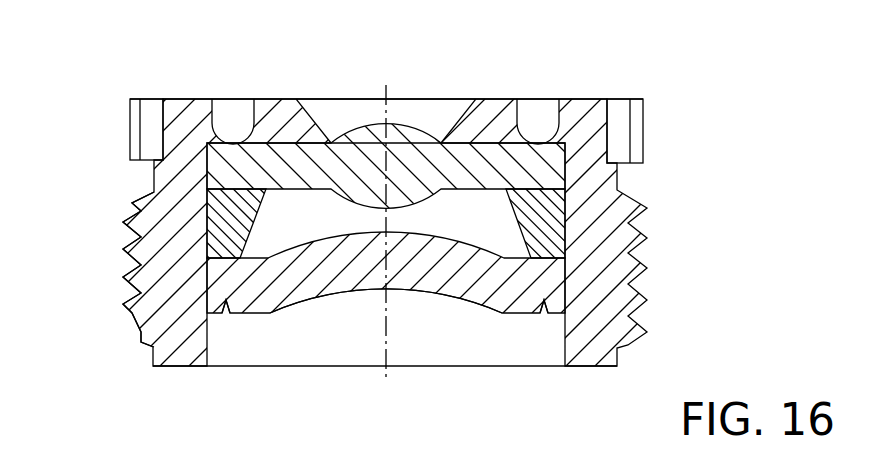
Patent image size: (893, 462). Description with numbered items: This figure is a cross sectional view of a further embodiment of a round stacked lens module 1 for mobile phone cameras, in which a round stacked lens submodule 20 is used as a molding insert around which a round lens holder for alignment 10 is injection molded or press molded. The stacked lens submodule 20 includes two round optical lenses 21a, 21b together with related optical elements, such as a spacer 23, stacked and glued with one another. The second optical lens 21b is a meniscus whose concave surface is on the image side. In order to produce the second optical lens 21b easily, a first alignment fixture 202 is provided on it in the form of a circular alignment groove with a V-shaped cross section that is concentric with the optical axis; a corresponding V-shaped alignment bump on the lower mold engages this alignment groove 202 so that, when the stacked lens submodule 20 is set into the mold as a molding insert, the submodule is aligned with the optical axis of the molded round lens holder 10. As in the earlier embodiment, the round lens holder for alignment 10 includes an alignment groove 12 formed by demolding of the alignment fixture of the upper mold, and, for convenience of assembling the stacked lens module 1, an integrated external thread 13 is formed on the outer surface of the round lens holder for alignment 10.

The round stacked lens module 1 is at (445, 218).
The round lens holder for alignment 10 is at (176, 90).
The alignment groove 12 is at (238, 108).
The external thread 13 is at (125, 322).
The round stacked lens submodule 20 is at (364, 282).
The first optical lens 21a is at (362, 147).
The second optical lens 21b is at (463, 296).
The spacer 23 is at (552, 228).
The first alignment fixture 202 is at (225, 308).